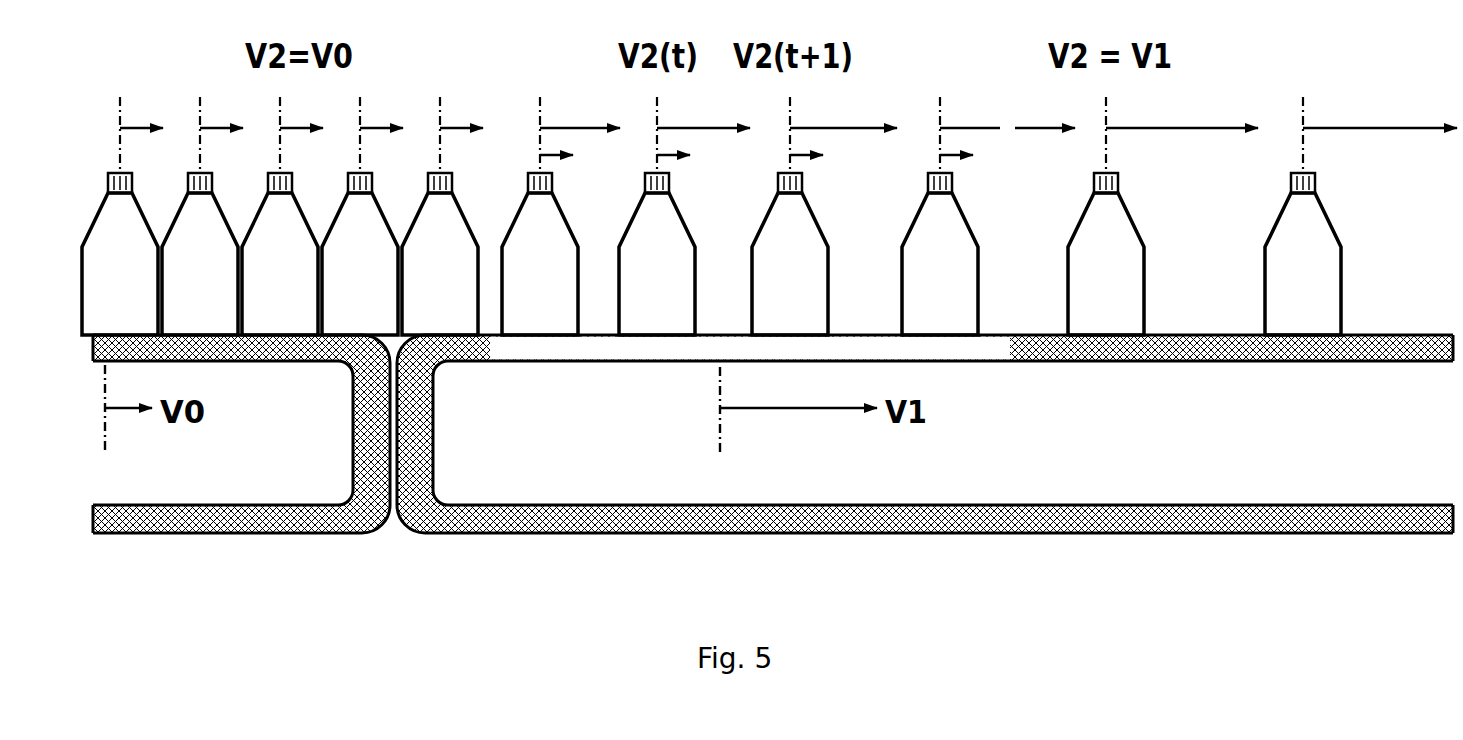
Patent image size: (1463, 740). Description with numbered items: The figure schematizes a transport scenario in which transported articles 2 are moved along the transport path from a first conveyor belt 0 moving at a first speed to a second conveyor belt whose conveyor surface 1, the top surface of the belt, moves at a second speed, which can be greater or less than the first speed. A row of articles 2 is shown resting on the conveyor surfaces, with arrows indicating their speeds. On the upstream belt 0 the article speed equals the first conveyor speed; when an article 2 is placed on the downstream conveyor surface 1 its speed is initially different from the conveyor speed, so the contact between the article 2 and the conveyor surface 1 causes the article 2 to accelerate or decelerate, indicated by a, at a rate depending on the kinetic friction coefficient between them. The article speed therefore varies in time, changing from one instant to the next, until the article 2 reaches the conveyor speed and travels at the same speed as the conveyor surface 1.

The conveyor belt 0 is at (259, 376).
The conveyor surface 1 is at (1072, 376).
The article 2 is at (129, 292).